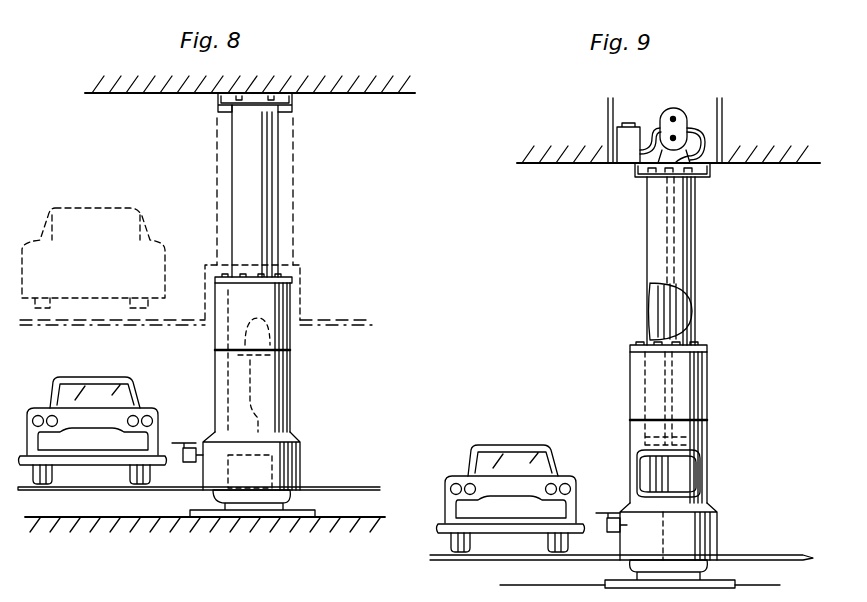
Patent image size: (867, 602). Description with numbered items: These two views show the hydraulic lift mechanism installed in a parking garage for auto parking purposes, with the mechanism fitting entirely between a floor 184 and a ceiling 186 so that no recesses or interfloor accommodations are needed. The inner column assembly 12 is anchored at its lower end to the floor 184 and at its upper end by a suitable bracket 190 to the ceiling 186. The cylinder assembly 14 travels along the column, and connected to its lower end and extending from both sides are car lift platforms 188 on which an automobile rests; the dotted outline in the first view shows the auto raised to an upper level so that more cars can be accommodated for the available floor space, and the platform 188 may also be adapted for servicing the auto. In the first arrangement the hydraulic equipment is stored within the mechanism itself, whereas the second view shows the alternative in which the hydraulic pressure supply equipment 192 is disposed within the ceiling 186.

In FIG. 8, the inner column assembly 12 is at (291, 222).
In FIG. 8, the cylinder assembly 14 is at (292, 404).
In FIG. 8, the floor 184 is at (374, 488).
In FIG. 8, the ceiling 186 is at (368, 95).
In FIG. 9, the ceiling 186 is at (580, 163).
In FIG. 8, the car lift platform 188 is at (157, 491).
In FIG. 8, the bracket 190 is at (290, 93).
In FIG. 9, the hydraulic pressure supply equipment 192 is at (659, 111).